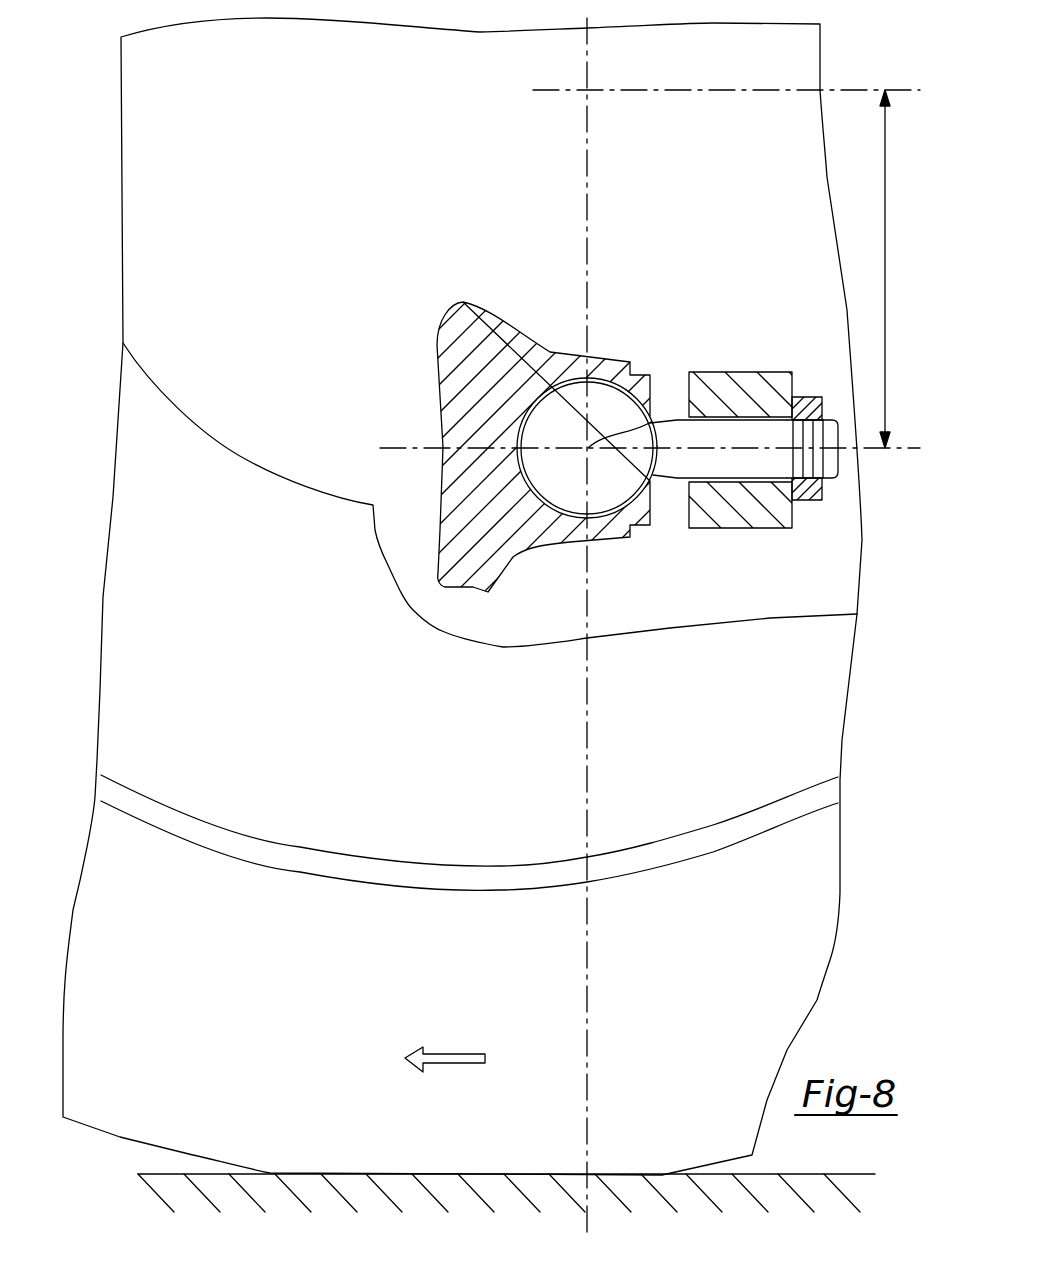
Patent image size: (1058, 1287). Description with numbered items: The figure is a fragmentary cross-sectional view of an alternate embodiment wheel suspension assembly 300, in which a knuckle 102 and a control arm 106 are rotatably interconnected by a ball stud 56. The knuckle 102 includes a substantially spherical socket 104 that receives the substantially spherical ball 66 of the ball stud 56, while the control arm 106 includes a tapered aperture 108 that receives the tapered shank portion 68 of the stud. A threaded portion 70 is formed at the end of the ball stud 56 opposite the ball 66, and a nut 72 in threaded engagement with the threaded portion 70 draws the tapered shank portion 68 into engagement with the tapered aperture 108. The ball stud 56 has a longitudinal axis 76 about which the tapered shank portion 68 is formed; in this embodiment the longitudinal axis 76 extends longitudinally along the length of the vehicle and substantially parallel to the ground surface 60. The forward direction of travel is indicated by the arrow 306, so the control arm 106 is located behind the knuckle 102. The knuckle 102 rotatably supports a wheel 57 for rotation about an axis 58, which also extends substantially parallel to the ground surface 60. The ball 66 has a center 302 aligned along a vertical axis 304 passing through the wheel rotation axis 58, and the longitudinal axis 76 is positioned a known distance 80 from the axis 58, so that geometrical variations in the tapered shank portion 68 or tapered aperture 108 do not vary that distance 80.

The wheel suspension assembly 300 is at (489, 234).
The wheel 57 is at (235, 838).
The ground surface 60 is at (157, 1173).
The vertical axis 304 is at (588, 680).
The axis 58 is at (587, 90).
The distance 80 is at (885, 143).
The knuckle 102 is at (500, 553).
The socket 104 is at (570, 397).
The ball 66 is at (597, 398).
The center 302 is at (653, 421).
The ball stud 56 is at (670, 492).
The longitudinal axis 76 is at (715, 447).
The tapered shank portion 68 is at (733, 474).
The tapered aperture 108 is at (737, 422).
The control arm 106 is at (783, 520).
The nut 72 is at (817, 405).
The threaded portion 70 is at (823, 473).
The arrow 306 is at (456, 1048).